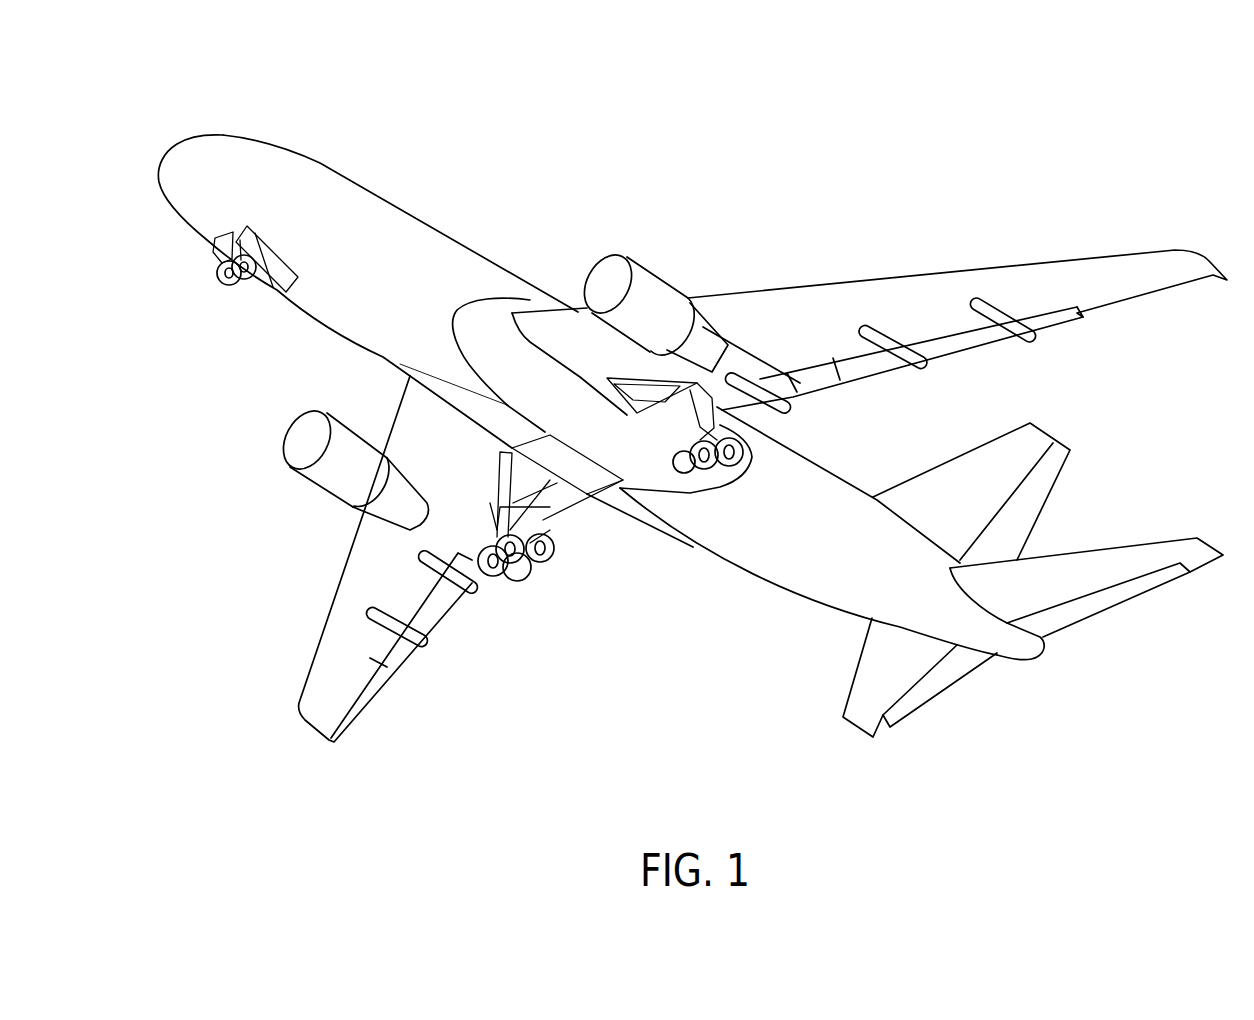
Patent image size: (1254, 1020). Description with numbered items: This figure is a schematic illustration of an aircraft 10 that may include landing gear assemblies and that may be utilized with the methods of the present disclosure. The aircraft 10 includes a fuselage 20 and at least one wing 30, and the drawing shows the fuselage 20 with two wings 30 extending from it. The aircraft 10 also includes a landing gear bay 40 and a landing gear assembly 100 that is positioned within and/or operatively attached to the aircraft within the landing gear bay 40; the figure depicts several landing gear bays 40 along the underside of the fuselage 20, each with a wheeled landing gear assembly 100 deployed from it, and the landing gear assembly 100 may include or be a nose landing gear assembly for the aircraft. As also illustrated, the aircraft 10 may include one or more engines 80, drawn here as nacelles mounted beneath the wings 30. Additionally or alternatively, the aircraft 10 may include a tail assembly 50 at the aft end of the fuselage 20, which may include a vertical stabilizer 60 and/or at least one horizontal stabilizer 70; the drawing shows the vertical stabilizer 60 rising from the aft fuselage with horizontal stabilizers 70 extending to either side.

The aircraft 10 is at (667, 387).
The fuselage 20 is at (432, 227).
The wing 30 is at (878, 275).
The landing gear bay 40 is at (462, 384).
The tail assembly 50 is at (974, 572).
The vertical stabilizer 60 is at (976, 446).
The horizontal stabilizer 70 is at (1115, 542).
The engine 80 is at (641, 254).
The landing gear assembly 100 is at (425, 425).